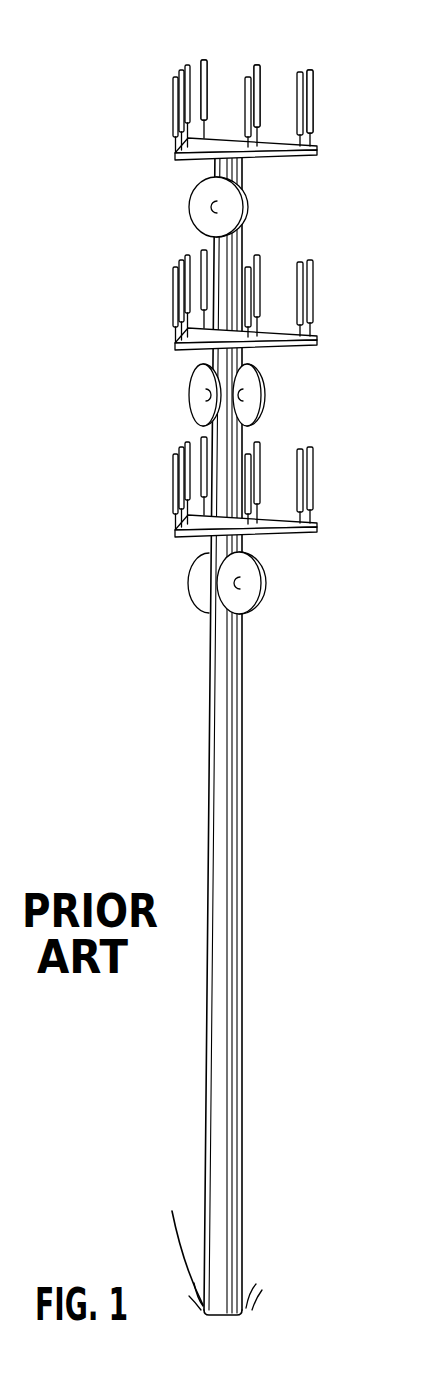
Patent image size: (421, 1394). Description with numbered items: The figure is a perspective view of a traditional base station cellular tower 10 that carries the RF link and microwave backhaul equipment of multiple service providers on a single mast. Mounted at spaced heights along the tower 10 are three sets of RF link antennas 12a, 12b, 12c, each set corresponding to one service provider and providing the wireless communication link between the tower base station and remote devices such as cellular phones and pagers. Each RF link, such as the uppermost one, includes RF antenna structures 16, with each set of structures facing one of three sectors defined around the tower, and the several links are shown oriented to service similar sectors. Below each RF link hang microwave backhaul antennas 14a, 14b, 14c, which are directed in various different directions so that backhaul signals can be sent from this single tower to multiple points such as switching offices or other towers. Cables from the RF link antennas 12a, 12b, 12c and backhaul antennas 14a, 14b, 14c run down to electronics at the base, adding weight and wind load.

The base station cellular tower 10 is at (93, 127).
The RF link antenna set 12a is at (337, 103).
The RF link antenna set 12b is at (333, 283).
The RF link antenna set 12c is at (333, 460).
The microwave backhaul antenna 14a is at (178, 205).
The microwave backhaul antennas 14b is at (177, 402).
The microwave backhaul antennas 14c is at (170, 587).
The RF antenna structures 16 is at (310, 70).